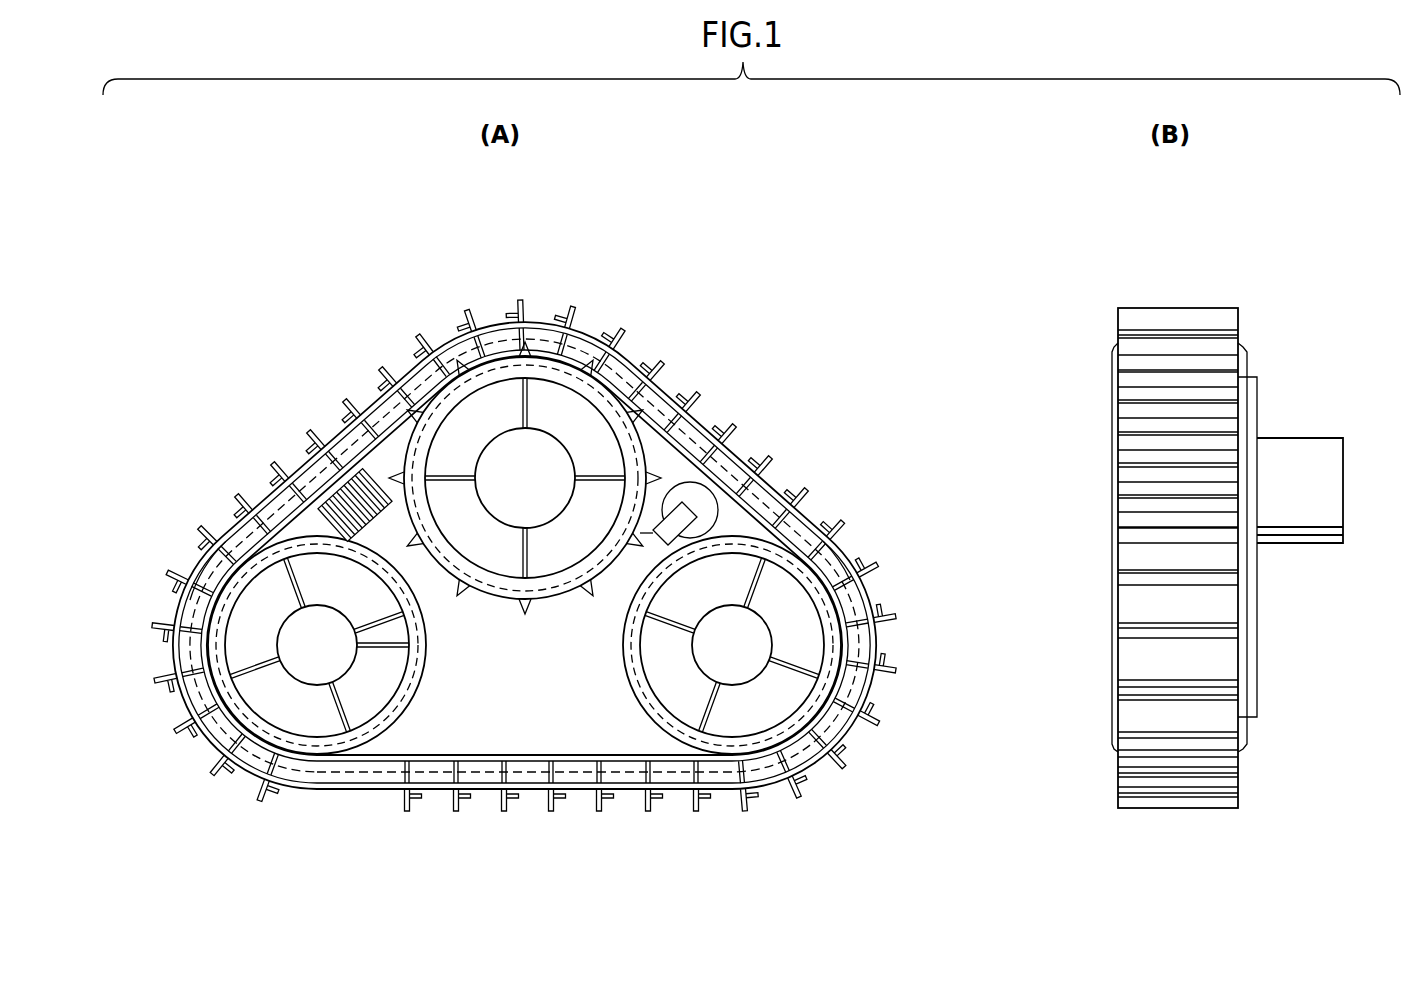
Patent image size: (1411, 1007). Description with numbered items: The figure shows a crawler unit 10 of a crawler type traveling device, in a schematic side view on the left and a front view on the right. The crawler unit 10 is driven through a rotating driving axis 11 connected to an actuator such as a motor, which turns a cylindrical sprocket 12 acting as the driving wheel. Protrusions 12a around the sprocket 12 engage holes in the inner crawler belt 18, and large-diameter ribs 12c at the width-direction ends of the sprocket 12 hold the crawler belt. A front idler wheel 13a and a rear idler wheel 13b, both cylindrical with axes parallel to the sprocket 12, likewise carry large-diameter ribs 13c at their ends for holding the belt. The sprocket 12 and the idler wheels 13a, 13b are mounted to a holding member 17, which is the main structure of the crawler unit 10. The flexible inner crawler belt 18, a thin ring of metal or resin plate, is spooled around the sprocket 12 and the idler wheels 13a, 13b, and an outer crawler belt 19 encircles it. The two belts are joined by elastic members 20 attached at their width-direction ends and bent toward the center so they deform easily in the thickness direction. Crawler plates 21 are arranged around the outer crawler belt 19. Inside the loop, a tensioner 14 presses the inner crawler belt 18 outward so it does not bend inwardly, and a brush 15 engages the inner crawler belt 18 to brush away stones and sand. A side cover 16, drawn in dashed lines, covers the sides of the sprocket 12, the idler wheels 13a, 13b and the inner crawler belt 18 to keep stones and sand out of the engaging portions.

The crawler unit 10 is at (722, 218).
The rotating driving axis 11 is at (1312, 450).
The sprocket 12 is at (510, 410).
The protrusions 12a is at (650, 475).
The ribs 12c is at (592, 345).
The front idler wheel 13a is at (735, 580).
The rear idler wheel 13b is at (282, 595).
The ribs 13c is at (215, 580).
The tensioner 14 is at (692, 505).
The brush 15 is at (378, 505).
The side cover 16 is at (760, 790).
The holding member 17 is at (1253, 640).
The inner crawler belt 18 is at (437, 757).
The outer crawler belt 19 is at (527, 789).
The elastic members 20 is at (690, 775).
The crawler plates 21 is at (313, 433).